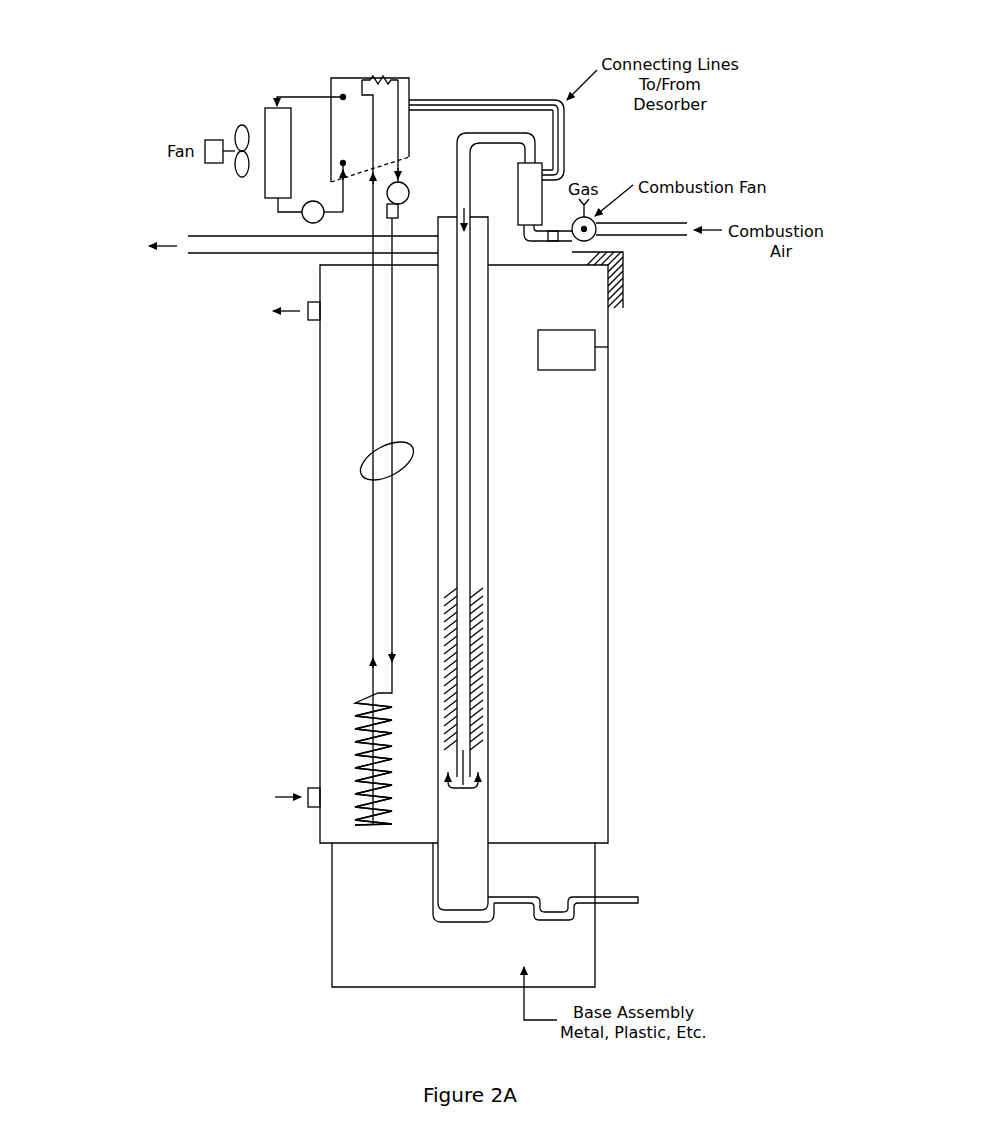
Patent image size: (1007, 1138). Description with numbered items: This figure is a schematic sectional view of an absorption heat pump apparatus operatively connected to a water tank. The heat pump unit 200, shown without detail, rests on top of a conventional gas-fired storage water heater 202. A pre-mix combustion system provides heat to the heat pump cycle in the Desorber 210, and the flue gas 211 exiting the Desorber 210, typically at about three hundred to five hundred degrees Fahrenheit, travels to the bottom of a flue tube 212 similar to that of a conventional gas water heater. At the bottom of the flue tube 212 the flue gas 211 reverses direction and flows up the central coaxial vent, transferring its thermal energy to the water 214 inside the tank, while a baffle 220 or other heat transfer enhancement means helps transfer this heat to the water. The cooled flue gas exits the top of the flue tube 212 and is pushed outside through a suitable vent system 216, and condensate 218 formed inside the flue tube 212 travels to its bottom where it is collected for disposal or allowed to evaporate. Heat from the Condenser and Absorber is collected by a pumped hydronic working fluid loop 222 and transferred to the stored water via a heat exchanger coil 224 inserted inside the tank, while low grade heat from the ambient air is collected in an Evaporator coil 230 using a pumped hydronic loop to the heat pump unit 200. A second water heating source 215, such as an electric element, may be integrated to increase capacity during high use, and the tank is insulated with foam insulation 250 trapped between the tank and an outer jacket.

The heat pump unit 200 is at (373, 74).
The evaporator coil 230 is at (265, 122).
The vent system 216 is at (203, 227).
The desorber 210 is at (543, 201).
The foam insulation 250 is at (623, 273).
The second water heating source 215 is at (573, 350).
The flue tube 212 is at (488, 507).
The storage water heater 202 is at (608, 563).
The hydronic working fluid loop 222 is at (357, 477).
The baffle 220 is at (477, 705).
The heat exchanger coil 224 is at (345, 722).
The flue gas 211 is at (465, 772).
The water 214 is at (545, 796).
The condensate 218 is at (648, 900).